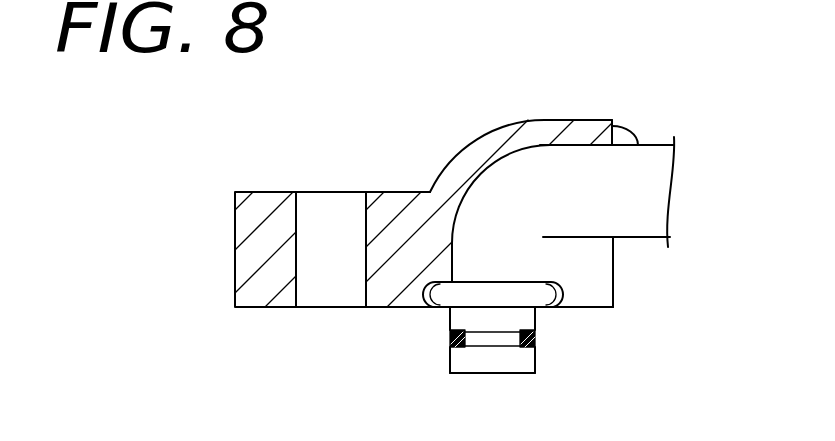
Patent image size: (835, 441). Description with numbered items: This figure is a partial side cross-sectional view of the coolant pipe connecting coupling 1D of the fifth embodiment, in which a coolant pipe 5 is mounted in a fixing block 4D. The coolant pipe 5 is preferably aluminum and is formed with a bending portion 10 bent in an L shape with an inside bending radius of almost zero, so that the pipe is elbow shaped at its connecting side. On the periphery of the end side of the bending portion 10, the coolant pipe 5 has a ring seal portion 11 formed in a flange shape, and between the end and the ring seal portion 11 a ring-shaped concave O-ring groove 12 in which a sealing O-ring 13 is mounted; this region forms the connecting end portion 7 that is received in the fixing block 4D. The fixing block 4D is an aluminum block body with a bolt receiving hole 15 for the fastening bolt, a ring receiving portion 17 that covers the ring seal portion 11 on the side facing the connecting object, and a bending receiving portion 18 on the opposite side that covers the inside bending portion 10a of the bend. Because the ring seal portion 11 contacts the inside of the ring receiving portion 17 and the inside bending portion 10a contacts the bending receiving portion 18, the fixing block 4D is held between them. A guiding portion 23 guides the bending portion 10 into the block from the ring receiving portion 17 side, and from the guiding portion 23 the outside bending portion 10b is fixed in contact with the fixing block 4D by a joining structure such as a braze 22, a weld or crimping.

The coolant pipe connecting coupling 1D is at (263, 173).
The fixing block 4D is at (240, 258).
The bolt receiving hole 15 is at (297, 283).
The bending portion 10 is at (513, 217).
The outside bending portion 10b is at (493, 190).
The inside bending portion 10a is at (525, 240).
The bending receiving portion 18 is at (553, 132).
The braze 22 is at (632, 131).
The coolant pipe 5 is at (663, 143).
The guiding portion 23 is at (598, 293).
The ring receiving portion 17 is at (435, 305).
The ring seal portion 11 is at (557, 295).
The O-ring groove 12 is at (490, 342).
The O-ring 13 is at (450, 342).
The connecting end portion 7 is at (518, 373).